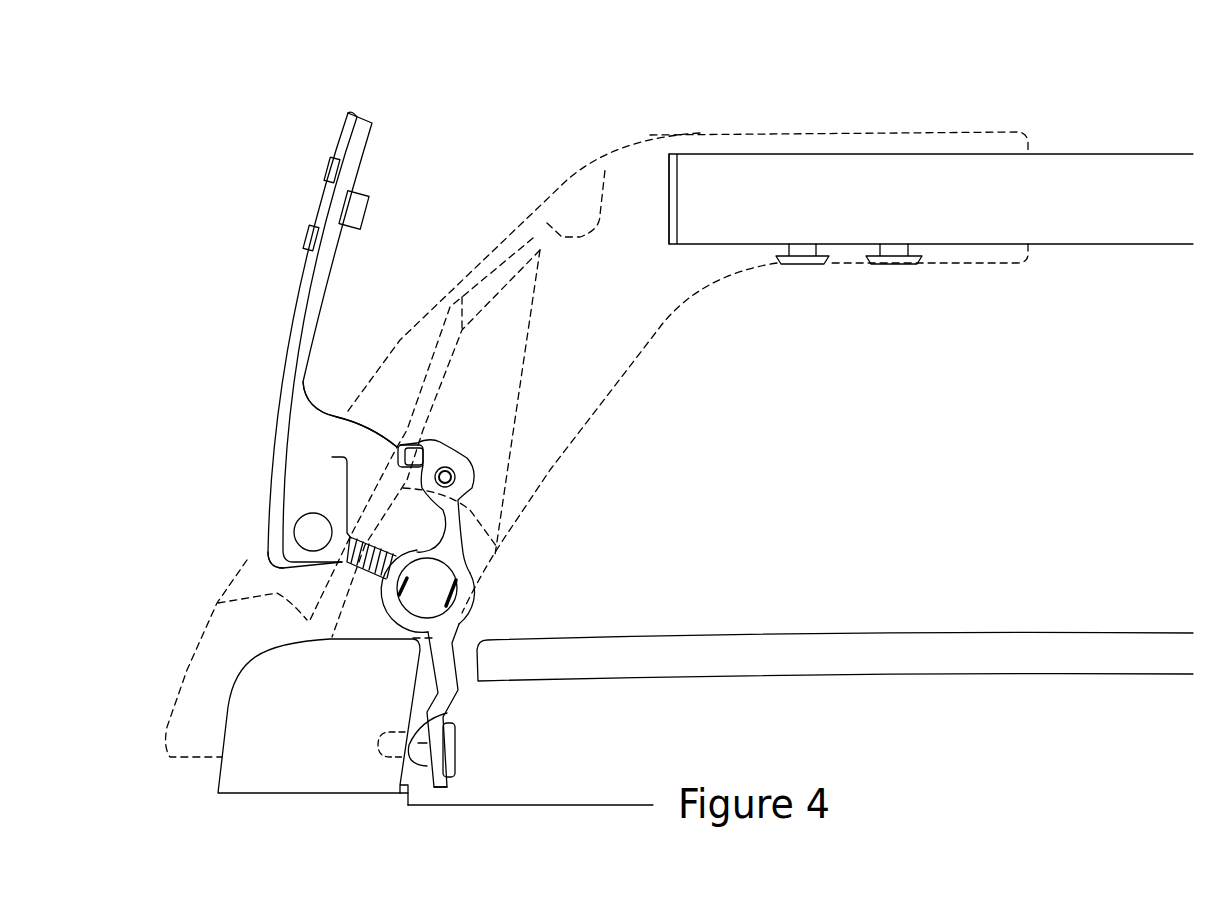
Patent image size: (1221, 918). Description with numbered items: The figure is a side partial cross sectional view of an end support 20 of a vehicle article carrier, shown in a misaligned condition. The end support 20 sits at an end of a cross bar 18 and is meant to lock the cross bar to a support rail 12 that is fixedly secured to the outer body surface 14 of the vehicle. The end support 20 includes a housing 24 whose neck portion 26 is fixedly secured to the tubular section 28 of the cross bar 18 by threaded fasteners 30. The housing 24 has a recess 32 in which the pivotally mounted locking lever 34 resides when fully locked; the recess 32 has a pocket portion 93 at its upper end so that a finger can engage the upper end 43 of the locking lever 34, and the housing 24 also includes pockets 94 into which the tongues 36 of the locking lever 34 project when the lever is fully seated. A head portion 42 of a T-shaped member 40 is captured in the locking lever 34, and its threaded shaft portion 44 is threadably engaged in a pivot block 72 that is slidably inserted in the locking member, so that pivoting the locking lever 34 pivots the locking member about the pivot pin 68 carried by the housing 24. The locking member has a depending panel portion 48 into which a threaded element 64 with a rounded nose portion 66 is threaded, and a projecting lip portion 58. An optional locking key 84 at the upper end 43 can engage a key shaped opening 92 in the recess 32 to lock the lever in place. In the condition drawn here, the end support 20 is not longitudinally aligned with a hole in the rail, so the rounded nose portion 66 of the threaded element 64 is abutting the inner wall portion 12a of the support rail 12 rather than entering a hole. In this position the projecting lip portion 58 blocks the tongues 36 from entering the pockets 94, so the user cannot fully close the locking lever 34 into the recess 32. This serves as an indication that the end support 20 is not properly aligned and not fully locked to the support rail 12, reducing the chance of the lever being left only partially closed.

The support rail 12 is at (229, 772).
The wall portion of the support rail 12a is at (398, 770).
The outer body surface 14 is at (590, 805).
The cross bar 18 is at (947, 92).
The end support 20 is at (262, 223).
The housing 24 is at (187, 670).
The neck portion 26 is at (838, 130).
The tubular section 28 is at (1112, 160).
The threaded fasteners 30 is at (805, 264).
The recess 32 is at (218, 603).
The locking lever 34 is at (284, 349).
The tongues 36 is at (370, 442).
The T-shaped member 40 is at (343, 569).
The head portion 42 is at (312, 532).
The upper end of the locking lever 43 is at (350, 112).
The threaded shaft portion 44 is at (380, 567).
The depending panel portion 48 is at (447, 785).
The projecting lip portion 58 is at (403, 440).
The threaded element 64 is at (455, 750).
The rounded nose portion 66 is at (447, 713).
The pivot pin 68 is at (455, 480).
The pivot block 72 is at (427, 590).
The locking key 84 is at (325, 190).
The key shaped opening 92 is at (510, 268).
The pocket portion 93 is at (605, 170).
The pockets 94 is at (497, 547).